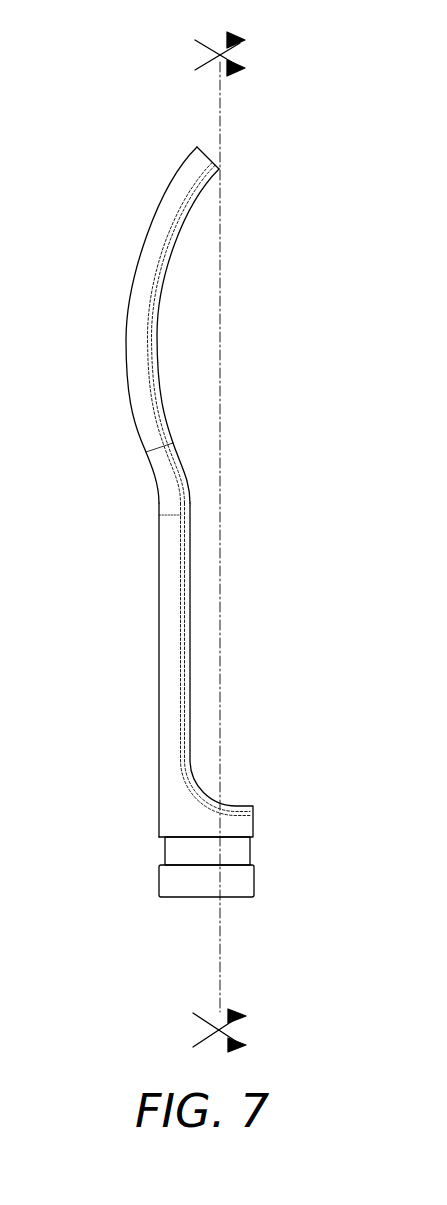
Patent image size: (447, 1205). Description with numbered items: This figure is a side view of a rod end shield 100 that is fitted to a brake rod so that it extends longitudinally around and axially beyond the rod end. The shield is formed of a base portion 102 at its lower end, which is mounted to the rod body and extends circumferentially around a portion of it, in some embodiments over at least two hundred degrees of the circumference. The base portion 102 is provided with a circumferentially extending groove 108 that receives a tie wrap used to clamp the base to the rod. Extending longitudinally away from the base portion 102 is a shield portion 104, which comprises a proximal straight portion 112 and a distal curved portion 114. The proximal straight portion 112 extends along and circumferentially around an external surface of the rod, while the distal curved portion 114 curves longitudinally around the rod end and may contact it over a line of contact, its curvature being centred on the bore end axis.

The rod end shield 100 is at (99, 640).
The base portion 102 is at (163, 882).
The shield portion 104 is at (150, 566).
The circumferentially extending groove 108 is at (243, 852).
The proximal straight portion 112 is at (163, 705).
The distal curved portion 114 is at (140, 280).